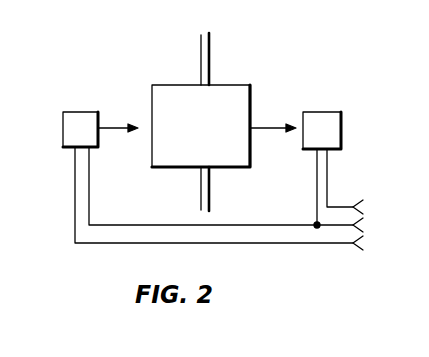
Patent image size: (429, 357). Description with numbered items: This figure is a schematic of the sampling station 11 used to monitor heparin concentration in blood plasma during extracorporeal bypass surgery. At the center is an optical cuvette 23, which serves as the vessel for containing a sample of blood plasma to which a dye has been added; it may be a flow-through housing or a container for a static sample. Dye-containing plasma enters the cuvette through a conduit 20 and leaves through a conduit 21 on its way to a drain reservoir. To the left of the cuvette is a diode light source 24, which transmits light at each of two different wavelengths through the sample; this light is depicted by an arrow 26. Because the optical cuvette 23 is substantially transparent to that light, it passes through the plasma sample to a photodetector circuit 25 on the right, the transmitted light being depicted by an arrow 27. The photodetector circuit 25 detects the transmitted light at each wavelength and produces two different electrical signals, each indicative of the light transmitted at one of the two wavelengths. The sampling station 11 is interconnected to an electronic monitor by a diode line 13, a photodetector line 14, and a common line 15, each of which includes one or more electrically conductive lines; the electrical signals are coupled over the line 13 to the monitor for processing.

The sampling station 11 is at (110, 62).
The diode line 13 is at (337, 207).
The photodetector line 14 is at (315, 243).
The common line 15 is at (343, 226).
The conduit 20 is at (210, 190).
The conduit 21 is at (210, 50).
The optical cuvette 23 is at (164, 85).
The diode light source 24 is at (77, 112).
The photodetector circuit 25 is at (322, 110).
The arrow 26 is at (116, 128).
The arrow 27 is at (272, 128).